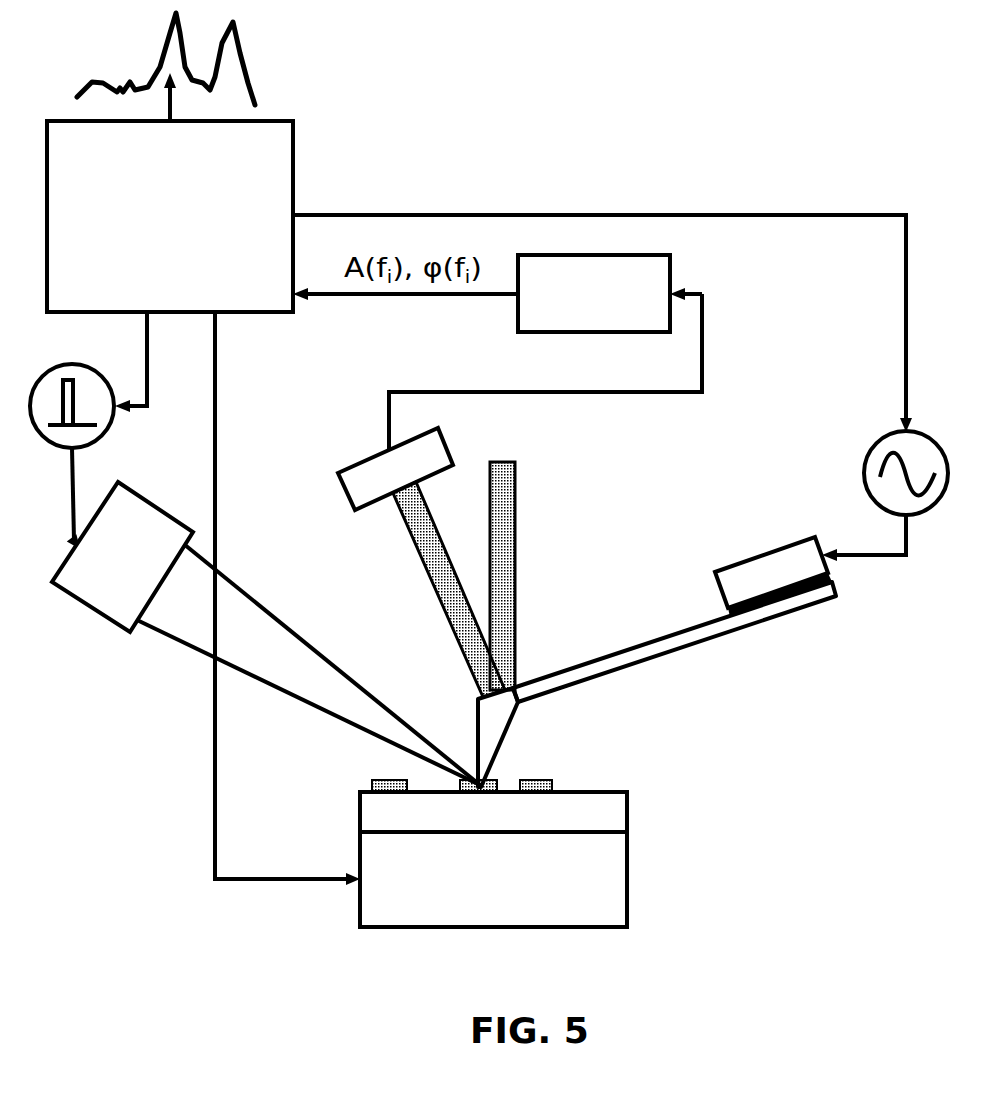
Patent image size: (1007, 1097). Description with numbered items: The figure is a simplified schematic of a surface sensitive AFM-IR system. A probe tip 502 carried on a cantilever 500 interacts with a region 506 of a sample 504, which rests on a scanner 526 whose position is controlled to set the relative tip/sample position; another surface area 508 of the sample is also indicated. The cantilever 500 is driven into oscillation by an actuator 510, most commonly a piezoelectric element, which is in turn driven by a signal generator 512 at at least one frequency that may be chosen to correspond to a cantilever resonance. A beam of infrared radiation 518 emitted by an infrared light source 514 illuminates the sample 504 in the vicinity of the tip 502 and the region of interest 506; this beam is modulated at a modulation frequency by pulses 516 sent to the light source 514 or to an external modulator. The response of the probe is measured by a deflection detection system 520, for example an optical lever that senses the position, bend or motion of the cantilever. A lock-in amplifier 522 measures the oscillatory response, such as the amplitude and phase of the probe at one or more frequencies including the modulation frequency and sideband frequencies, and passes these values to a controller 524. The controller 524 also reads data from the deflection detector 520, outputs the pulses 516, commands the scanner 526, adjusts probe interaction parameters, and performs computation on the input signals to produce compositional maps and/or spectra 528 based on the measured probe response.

The cantilever 500 is at (668, 625).
The probe tip 502 is at (488, 778).
The sample 504 is at (511, 827).
The region of the sample 506 is at (498, 782).
The sample region 508 is at (440, 786).
The actuator 510 is at (762, 554).
The signal generator 512 is at (872, 447).
The infrared light source 514 is at (136, 577).
The pulses 516 is at (107, 440).
The beam of infrared radiation 518 is at (286, 672).
The deflection detection system 520 is at (358, 447).
The lock-in amplifier 522 is at (626, 310).
The controller 524 is at (193, 225).
The scanner 526 is at (516, 895).
The spectra 528 is at (252, 62).